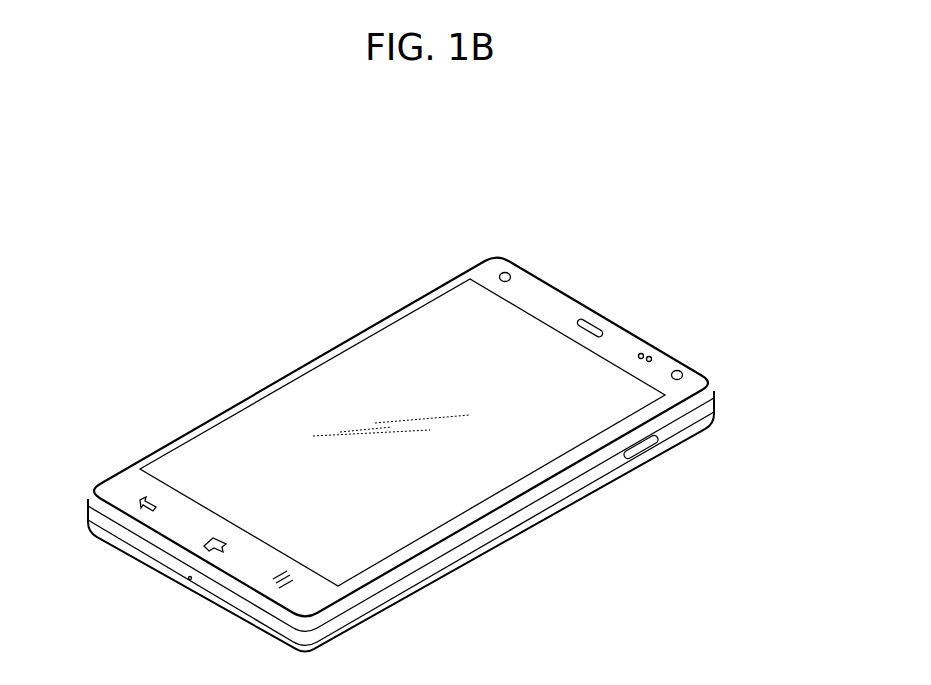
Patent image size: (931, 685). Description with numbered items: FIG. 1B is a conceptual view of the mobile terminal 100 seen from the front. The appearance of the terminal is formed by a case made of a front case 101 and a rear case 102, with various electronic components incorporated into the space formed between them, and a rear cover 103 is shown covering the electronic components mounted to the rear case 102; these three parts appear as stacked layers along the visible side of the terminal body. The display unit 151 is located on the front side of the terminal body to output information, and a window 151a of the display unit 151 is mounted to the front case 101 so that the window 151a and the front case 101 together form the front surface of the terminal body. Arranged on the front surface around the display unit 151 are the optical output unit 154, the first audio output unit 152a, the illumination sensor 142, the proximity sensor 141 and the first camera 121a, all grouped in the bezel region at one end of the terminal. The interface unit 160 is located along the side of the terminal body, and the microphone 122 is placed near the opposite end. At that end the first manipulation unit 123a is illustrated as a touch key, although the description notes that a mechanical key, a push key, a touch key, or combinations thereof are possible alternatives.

The mobile terminal 100 is at (435, 442).
The front case 101 is at (715, 388).
The rear case 102 is at (714, 406).
The rear cover 103 is at (705, 430).
The display unit 151 is at (402, 410).
The window 151a is at (430, 337).
The optical output unit 154 is at (511, 274).
The first audio output unit 152a is at (588, 319).
The illumination sensor 142 is at (642, 353).
The proximity sensor 141 is at (651, 357).
The first camera 121a is at (683, 370).
The interface unit 160 is at (646, 452).
The microphone 122 is at (184, 586).
The first manipulation unit 123a is at (274, 584).